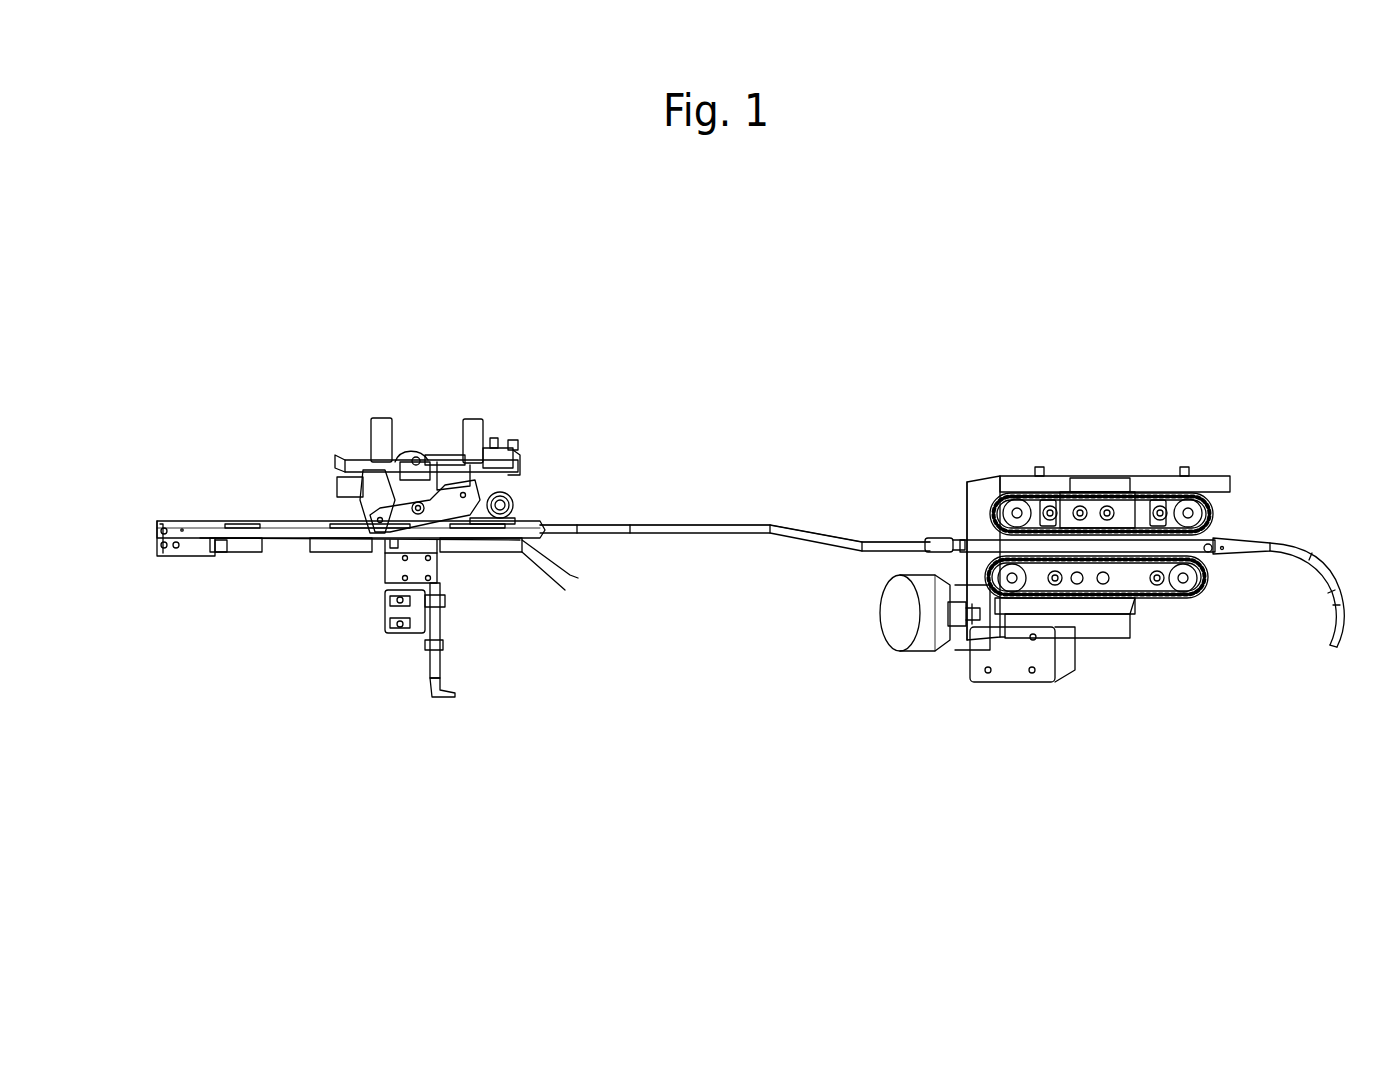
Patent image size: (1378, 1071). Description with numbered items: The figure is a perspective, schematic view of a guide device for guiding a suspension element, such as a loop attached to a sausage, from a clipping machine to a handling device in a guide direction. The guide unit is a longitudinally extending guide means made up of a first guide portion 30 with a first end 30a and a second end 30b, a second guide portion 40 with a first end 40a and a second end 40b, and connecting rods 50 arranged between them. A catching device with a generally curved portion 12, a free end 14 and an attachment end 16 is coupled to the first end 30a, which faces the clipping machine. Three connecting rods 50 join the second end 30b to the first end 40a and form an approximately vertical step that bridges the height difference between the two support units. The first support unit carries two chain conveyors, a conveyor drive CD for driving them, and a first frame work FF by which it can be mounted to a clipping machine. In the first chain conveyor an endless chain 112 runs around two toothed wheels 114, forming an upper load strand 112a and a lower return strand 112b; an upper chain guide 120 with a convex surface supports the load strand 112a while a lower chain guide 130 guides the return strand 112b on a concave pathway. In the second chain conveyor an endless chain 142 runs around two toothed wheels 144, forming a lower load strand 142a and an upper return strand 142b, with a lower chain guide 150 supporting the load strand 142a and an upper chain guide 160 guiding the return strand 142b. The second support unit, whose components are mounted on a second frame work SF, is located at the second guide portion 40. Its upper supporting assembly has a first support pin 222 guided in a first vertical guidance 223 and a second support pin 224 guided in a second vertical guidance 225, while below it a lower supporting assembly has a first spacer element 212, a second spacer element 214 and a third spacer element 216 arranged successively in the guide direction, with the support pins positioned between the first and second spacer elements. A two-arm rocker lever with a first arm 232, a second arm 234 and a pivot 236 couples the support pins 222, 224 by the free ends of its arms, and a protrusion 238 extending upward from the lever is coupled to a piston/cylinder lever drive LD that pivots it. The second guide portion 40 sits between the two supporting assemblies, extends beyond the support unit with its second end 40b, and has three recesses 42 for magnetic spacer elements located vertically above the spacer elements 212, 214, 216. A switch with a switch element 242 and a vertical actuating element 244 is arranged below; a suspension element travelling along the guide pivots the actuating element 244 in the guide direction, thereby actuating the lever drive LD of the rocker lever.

The curved portion 12 is at (1315, 553).
The first or free end 14 is at (1334, 638).
The second or attachment end 16 is at (1225, 548).
The first guide portion 30 is at (985, 628).
The first end of first guide portion 30a is at (1210, 550).
The second end of first guide portion 30b is at (975, 518).
The second guide portion 40 is at (305, 525).
The first end of second guide portion 40a is at (550, 535).
The second end of second guide portion 40b is at (195, 525).
The recesses 42 is at (245, 530).
The connecting rods 50 is at (885, 546).
The endless chain 112 is at (1195, 586).
The load strand 112a is at (1150, 592).
The return strand 112b is at (1118, 592).
The toothed wheels 114 is at (935, 540).
The upper chain guide 120 is at (1110, 602).
The lower chain guide 130 is at (1067, 610).
The endless chain 142 is at (1200, 497).
The load strand 142a is at (1140, 530).
The return strand 142b is at (1120, 505).
The toothed wheels 144 is at (1010, 497).
The lower chain guide 150 is at (1053, 515).
The upper chain guide 160 is at (1090, 492).
The first spacer element 212 is at (520, 555).
The second spacer element 214 is at (360, 550).
The third spacer element 216 is at (232, 548).
The first support pin 222 is at (478, 494).
The first vertical guidance 223 is at (472, 428).
The second support pin 224 is at (355, 487).
The second vertical guidance 225 is at (380, 440).
The first arm 232 is at (475, 532).
The second arm 234 is at (418, 462).
The pivot 236 is at (433, 468).
The protrusion 238 is at (418, 463).
The switch element 242 is at (430, 652).
The actuating element 244 is at (405, 608).
The conveyor drive CD is at (905, 600).
The first frame work FF is at (995, 668).
The lever drive LD is at (510, 447).
The second frame work SF is at (397, 583).